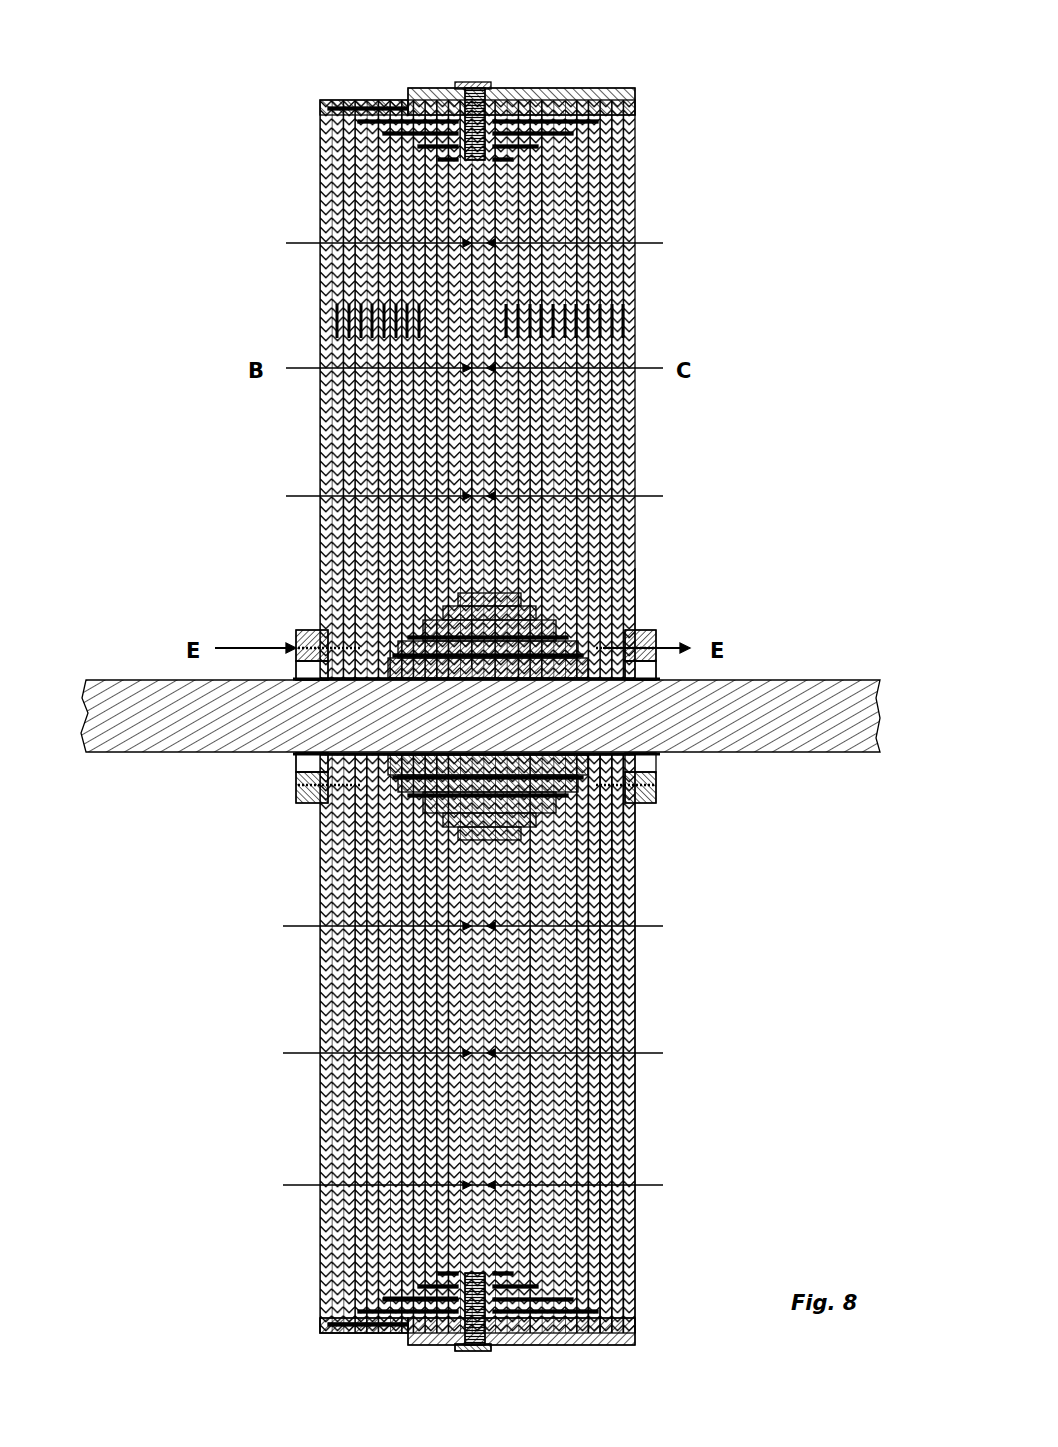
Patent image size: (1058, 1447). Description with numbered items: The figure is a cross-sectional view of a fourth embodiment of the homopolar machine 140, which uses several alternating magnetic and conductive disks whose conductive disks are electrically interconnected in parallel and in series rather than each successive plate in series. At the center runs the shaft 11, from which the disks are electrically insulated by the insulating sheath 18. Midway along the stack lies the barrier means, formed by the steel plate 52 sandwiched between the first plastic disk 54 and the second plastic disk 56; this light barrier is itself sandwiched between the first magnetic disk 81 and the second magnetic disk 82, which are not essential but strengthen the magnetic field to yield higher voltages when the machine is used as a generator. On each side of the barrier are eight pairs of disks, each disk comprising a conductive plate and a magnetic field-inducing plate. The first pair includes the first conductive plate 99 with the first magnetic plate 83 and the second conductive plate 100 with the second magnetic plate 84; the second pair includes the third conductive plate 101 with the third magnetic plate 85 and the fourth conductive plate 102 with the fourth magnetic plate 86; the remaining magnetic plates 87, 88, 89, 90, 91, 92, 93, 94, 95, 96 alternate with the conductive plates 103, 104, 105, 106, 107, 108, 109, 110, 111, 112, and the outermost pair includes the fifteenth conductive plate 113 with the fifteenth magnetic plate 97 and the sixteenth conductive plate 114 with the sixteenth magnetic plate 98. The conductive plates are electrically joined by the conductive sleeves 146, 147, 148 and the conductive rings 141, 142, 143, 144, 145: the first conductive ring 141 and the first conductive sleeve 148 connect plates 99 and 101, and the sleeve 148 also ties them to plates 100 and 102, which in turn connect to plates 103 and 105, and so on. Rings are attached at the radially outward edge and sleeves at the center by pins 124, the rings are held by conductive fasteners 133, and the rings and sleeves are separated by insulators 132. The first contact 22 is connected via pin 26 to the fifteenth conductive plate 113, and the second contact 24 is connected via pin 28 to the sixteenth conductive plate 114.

The shaft 11 is at (825, 672).
The insulating sheath 18 is at (600, 672).
The first contact 22 is at (292, 655).
The second contact 24 is at (640, 625).
The pin 26 is at (292, 622).
The pin 28 is at (618, 600).
The steel plate 52 is at (476, 215).
The first plastic disk 54 is at (455, 152).
The second plastic disk 56 is at (560, 104).
The first magnetic disk 81 is at (445, 490).
The second magnetic disk 82 is at (490, 515).
The first magnetic plate 83 is at (429, 452).
The second magnetic plate 84 is at (508, 470).
The third magnetic plate 85 is at (417, 420).
The fourth magnetic plate 86 is at (522, 440).
The fifth magnetic plate 87 is at (405, 388).
The sixth magnetic plate 88 is at (535, 410).
The seventh magnetic plate 89 is at (394, 273).
The eighth magnetic plate 90 is at (567, 320).
The ninth magnetic plate 91 is at (382, 262).
The tenth magnetic plate 92 is at (580, 290).
The eleventh magnetic plate 93 is at (370, 198).
The twelfth magnetic plate 94 is at (590, 260).
The thirteenth magnetic plate 95 is at (347, 178).
The fourteenth magnetic plate 96 is at (602, 240).
The fifteenth magnetic plate 97 is at (336, 152).
The sixteenth magnetic plate 98 is at (612, 197).
The first conductive plate 99 is at (347, 935).
The second conductive plate 100 is at (627, 1020).
The third conductive plate 101 is at (360, 965).
The fourth conductive plate 102 is at (617, 1050).
The fifth conductive plate 103 is at (372, 1000).
The sixth conductive plate 104 is at (605, 1080).
The sixth conductor plate 105 is at (392, 1030).
The eighth conductive plate 106 is at (593, 1110).
The ninth conductive plate 107 is at (405, 1100).
The tenth conductive plate 108 is at (605, 1180).
The eleventh conductive plate 109 is at (417, 1135).
The twelfth conductive plate 110 is at (595, 1215).
The thirteenth conductive plate 111 is at (430, 1170).
The fourteenth conductive plate 112 is at (585, 1245).
The fifteenth conductive plate 113 is at (445, 1205).
The sixteenth conductive plate 114 is at (590, 1275).
The pins 124 is at (288, 775).
The insulators 132 is at (335, 795).
The conductive fasteners 133 is at (474, 78).
The homopolar machine 140 is at (740, 298).
The first conductive ring 141 is at (400, 1290).
The conductive ring 142 is at (400, 1325).
The conductive ring 143 is at (350, 1330).
The conductive ring 144 is at (432, 1335).
The conductive ring 145 is at (457, 1342).
The conductive sleeve 146 is at (560, 783).
The conductive sleeve 147 is at (530, 790).
The first conductive sleeve 148 is at (527, 835).